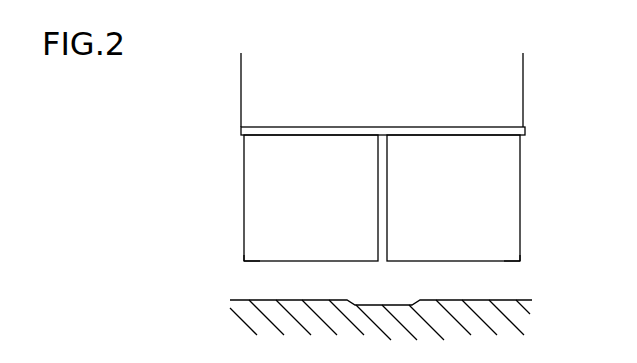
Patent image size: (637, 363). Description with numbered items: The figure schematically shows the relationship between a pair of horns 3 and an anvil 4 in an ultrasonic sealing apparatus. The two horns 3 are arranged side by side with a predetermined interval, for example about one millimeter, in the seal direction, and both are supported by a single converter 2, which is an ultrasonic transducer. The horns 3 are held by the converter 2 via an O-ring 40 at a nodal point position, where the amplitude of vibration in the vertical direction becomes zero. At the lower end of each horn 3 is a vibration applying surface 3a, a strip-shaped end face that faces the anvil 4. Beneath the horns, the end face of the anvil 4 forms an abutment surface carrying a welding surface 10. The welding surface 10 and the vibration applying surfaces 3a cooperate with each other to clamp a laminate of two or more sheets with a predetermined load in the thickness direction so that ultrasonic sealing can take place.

The converter 2 is at (523, 88).
The O-ring 40 is at (523, 131).
The horn 3 is at (248, 182).
The vibration applying surface 3a is at (252, 261).
The welding surface 10 is at (521, 299).
The anvil 4 is at (529, 318).